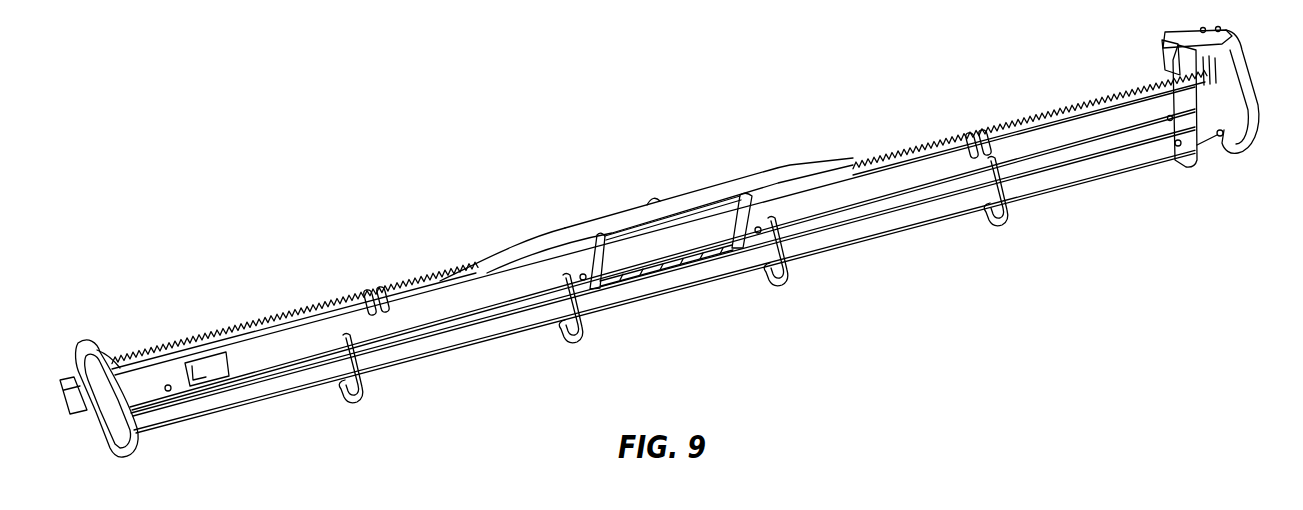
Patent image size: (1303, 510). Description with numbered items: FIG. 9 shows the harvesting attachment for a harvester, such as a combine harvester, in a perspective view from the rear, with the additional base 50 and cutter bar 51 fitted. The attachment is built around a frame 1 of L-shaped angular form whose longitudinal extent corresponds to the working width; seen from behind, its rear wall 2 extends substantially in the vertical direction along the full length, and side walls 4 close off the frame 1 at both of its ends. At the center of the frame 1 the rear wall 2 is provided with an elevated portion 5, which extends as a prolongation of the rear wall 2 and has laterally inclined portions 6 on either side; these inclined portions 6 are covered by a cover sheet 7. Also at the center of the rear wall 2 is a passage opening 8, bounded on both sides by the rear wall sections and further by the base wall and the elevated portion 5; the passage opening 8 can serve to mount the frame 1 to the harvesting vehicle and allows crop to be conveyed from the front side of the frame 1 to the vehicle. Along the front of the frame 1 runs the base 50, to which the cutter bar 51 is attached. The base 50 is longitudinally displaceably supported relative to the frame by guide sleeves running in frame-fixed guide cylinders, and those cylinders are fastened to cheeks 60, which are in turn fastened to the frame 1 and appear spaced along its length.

The frame 1 is at (428, 183).
The rear wall 2 is at (285, 350).
The side walls 4 is at (100, 397).
The elevated portion 5 is at (622, 217).
The inclined portions 6 is at (567, 246).
The cover sheet 7 is at (527, 248).
The passage opening 8 is at (672, 236).
The base 50 is at (317, 262).
The cutter bar 51 is at (428, 281).
The cheeks 60 is at (365, 392).